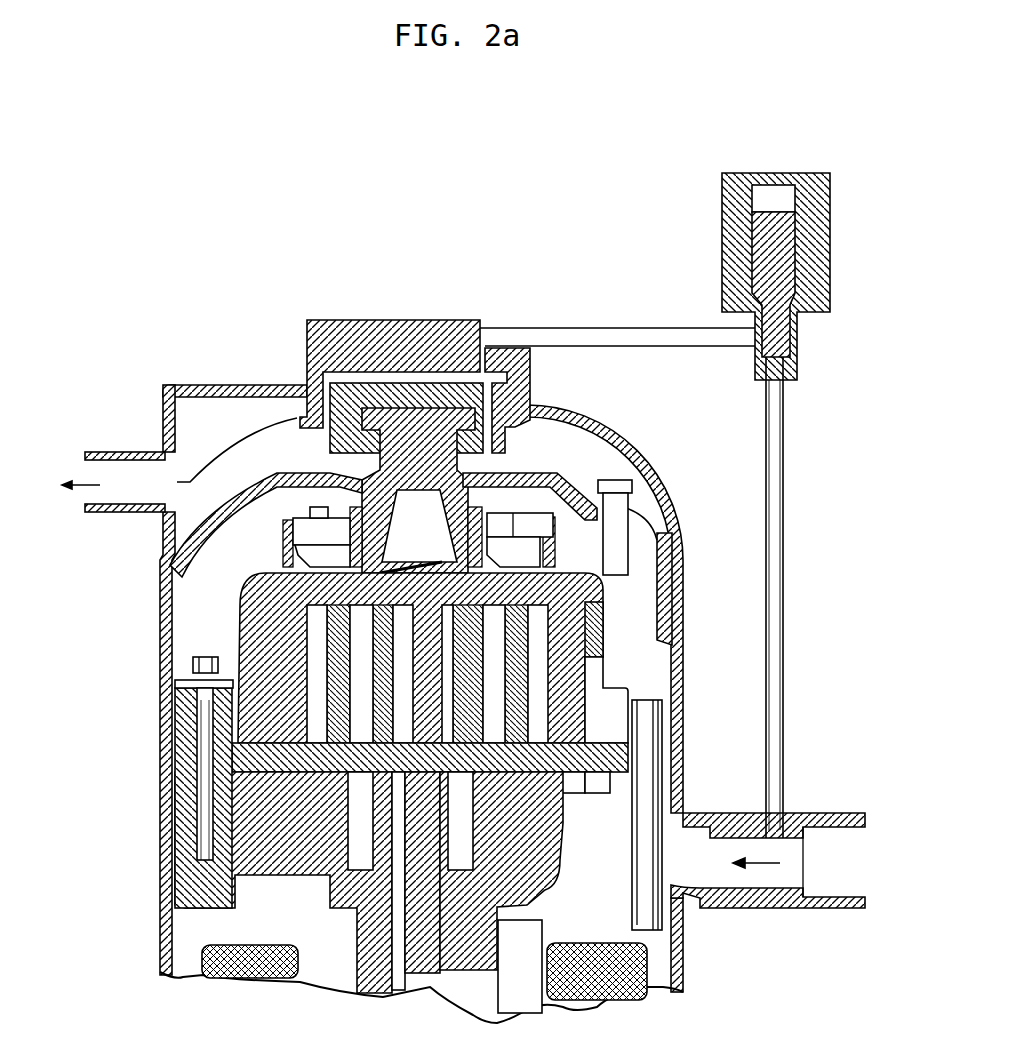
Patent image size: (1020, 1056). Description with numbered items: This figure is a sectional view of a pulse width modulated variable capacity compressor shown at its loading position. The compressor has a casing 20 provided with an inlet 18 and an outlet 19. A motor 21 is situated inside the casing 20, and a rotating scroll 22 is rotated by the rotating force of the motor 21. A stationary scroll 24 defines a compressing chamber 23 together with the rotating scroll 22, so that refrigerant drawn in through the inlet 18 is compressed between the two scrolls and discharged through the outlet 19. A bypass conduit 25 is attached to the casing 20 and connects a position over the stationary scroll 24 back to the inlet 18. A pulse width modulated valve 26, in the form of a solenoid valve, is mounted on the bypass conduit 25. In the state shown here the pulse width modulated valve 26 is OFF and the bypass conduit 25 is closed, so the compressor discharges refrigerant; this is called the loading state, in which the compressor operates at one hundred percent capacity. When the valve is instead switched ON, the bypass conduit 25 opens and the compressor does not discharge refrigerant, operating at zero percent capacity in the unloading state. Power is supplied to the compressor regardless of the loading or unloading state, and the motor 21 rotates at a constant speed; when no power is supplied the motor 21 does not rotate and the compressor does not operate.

The inlet 18 is at (817, 815).
The outlet 19 is at (110, 452).
The casing 20 is at (163, 808).
The motor 21 is at (230, 940).
The rotating scroll 22 is at (262, 750).
The compressing chamber 23 is at (247, 707).
The stationary scroll 24 is at (240, 625).
The bypass conduit 25 is at (786, 418).
The pulse width modulated valve 26 is at (822, 236).